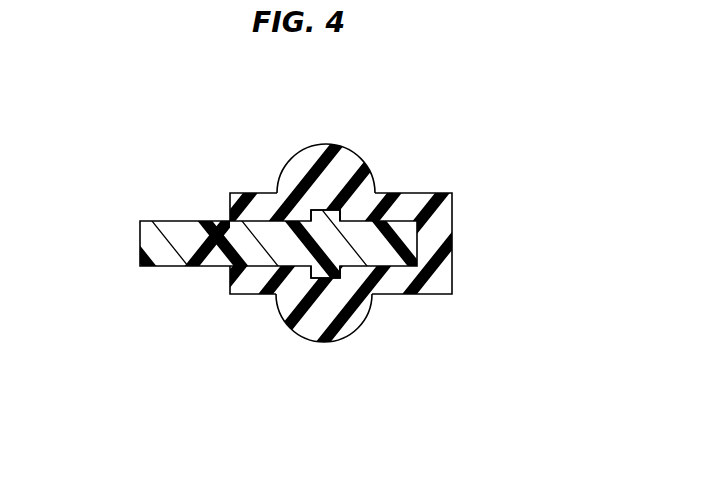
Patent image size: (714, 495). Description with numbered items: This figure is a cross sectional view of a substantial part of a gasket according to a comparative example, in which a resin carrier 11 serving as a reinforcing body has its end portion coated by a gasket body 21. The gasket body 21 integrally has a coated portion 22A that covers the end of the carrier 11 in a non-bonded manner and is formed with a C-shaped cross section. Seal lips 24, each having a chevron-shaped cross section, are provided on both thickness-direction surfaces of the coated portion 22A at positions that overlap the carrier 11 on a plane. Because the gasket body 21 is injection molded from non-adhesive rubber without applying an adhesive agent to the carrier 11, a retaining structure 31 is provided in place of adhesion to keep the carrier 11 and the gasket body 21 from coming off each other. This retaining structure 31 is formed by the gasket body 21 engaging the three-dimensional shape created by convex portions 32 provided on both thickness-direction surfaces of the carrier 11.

The carrier 11 is at (158, 245).
The gasket body 21 is at (252, 206).
The coated portion 22A is at (434, 240).
The seal lip 24 is at (318, 158).
The retaining structure 31 is at (325, 210).
The convex portion 32 is at (337, 212).